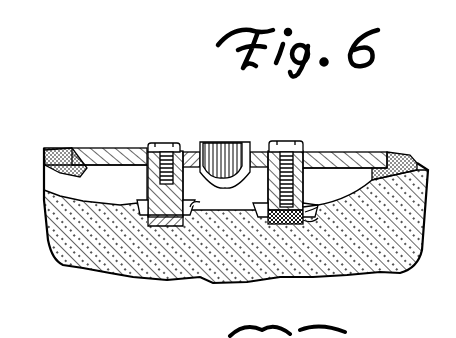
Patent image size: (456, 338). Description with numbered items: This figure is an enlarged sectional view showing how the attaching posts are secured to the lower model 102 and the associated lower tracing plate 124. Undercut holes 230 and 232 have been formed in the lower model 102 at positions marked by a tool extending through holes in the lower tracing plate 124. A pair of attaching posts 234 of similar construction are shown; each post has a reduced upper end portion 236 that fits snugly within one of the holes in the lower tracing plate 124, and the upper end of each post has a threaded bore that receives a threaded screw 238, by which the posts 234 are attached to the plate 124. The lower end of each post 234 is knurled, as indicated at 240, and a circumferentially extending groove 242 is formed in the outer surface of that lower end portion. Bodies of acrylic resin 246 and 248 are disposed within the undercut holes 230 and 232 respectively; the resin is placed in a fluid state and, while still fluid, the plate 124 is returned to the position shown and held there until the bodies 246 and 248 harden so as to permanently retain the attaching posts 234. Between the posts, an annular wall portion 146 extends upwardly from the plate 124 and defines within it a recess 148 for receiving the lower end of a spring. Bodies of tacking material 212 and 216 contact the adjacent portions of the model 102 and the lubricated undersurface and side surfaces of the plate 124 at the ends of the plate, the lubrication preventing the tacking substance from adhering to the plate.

The housing body 102 is at (137, 277).
The lower tracing plate 124 is at (102, 158).
The body of tacking material 212 is at (61, 178).
The body of tacking material 216 is at (399, 157).
The attaching post 234 is at (145, 184).
The reduced upper end portion 236 is at (148, 150).
The threaded screw 238 is at (168, 141).
The annular wall portion 146 is at (203, 145).
The recess 148 is at (244, 150).
The circumferentially extending groove 242 is at (252, 256).
The body of acrylic resin 246 is at (140, 218).
The undercut hole 230 is at (183, 230).
The knurled lower end 240 is at (287, 232).
The undercut hole 232 is at (313, 228).
The body of acrylic resin 248 is at (318, 215).